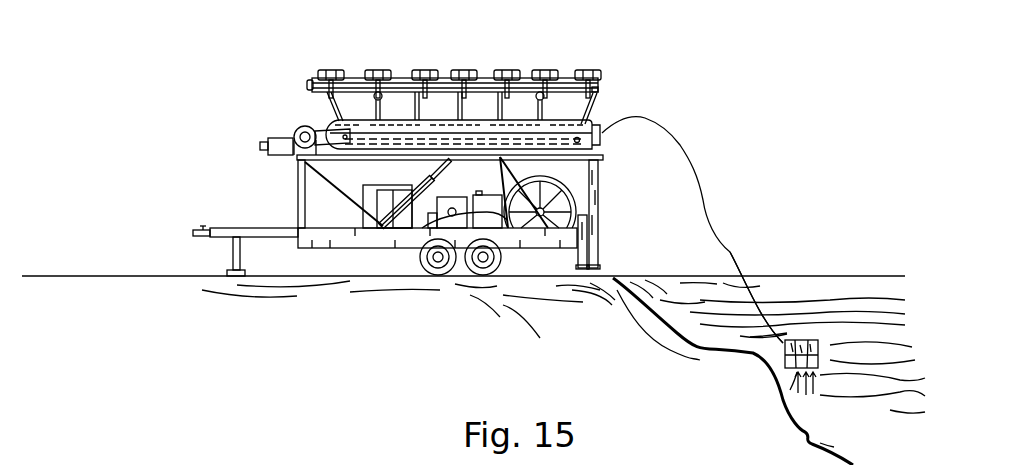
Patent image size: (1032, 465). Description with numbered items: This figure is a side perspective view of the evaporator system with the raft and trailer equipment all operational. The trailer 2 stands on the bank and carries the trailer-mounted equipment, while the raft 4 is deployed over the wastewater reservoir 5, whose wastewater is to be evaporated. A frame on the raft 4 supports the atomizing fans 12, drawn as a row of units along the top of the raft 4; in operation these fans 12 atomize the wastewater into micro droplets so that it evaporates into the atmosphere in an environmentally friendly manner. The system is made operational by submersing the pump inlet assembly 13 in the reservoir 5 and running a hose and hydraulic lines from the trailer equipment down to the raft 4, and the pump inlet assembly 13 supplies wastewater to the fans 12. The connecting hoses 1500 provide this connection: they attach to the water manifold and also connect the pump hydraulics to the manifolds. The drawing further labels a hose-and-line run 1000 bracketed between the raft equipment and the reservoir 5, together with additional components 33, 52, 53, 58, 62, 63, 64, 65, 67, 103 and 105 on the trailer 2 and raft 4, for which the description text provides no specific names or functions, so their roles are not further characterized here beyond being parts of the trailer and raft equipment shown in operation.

The trailer 2 is at (243, 229).
The raft 4 is at (588, 102).
The wastewater reservoir 5 is at (745, 332).
The atomizing fans 12 is at (380, 73).
The pump inlet assembly 13 is at (815, 340).
The spray bar manifold 33 is at (463, 134).
The support frame 52 is at (301, 182).
The drive motor and pivot 53 is at (592, 127).
The control cabinet 58 is at (380, 207).
The hydraulic cylinder 62 is at (430, 178).
The pump unit 63 is at (453, 213).
The hose reel 64 is at (600, 158).
The hose reel spokes 65 is at (583, 183).
The engine unit 67 is at (485, 205).
The short post 103 is at (600, 253).
The tall post 105 is at (598, 211).
The supply hose assembly 1000 is at (686, 75).
The connecting hoses 1500 is at (725, 250).